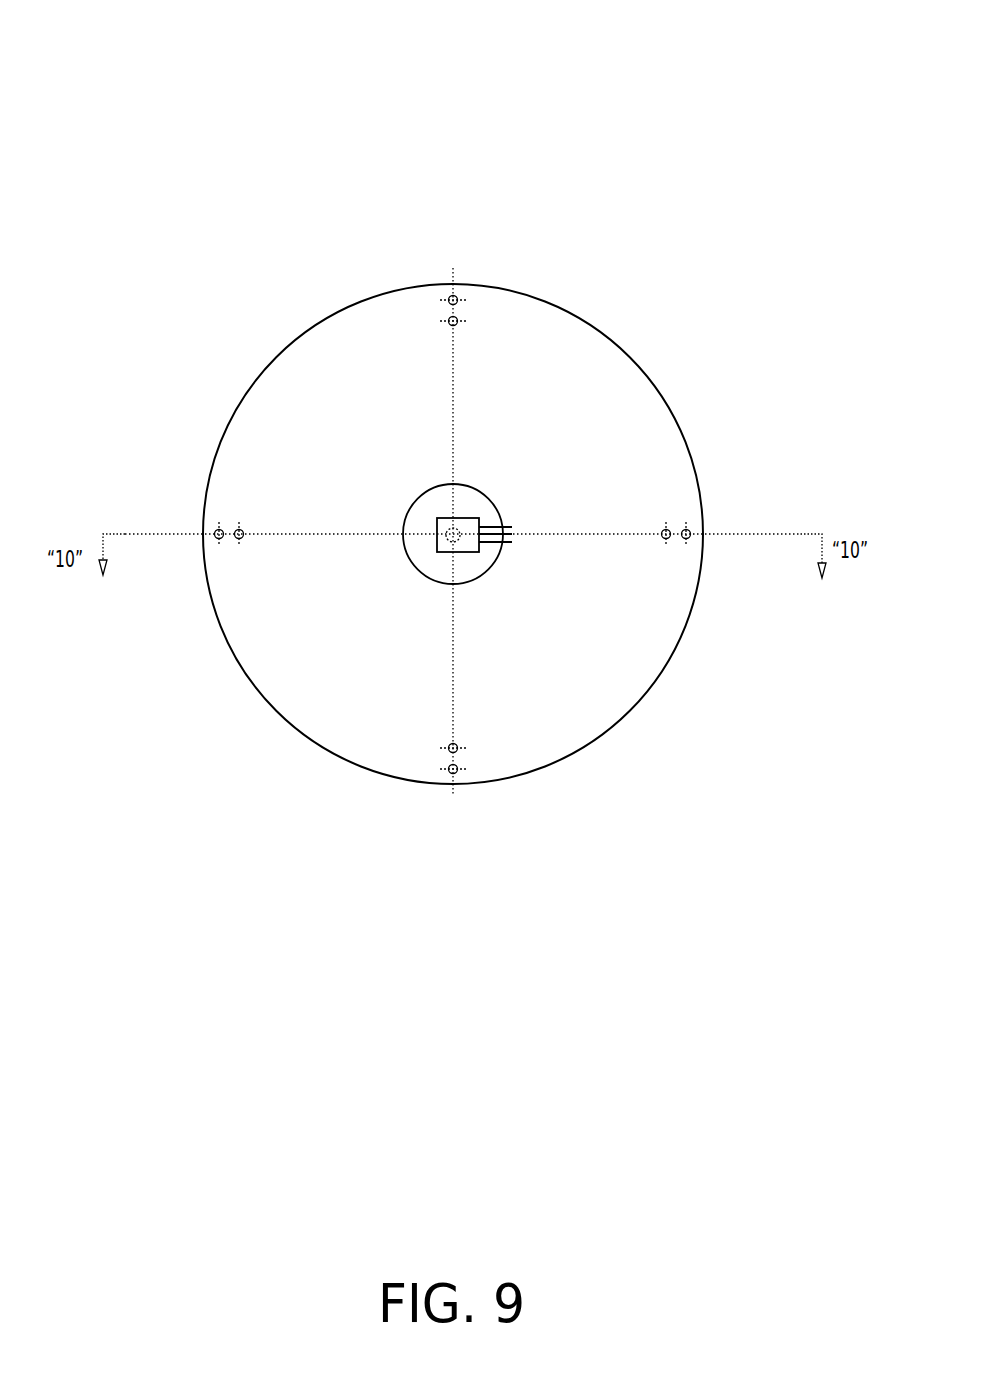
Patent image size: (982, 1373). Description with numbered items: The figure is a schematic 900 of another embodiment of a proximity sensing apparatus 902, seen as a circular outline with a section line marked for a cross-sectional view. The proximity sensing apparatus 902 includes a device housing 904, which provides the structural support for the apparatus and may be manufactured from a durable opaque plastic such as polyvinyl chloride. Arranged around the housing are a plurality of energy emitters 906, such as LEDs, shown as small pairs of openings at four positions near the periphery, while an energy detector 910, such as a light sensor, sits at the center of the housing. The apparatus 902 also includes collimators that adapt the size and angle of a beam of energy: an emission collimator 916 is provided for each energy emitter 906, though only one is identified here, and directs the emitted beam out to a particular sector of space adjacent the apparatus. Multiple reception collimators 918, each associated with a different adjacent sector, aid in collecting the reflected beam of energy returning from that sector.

The schematic 900 is at (804, 49).
The proximity sensing apparatus 902 is at (735, 200).
The device housing 904 is at (304, 308).
The energy emitters 906 is at (206, 525).
The energy detector 910 is at (485, 515).
The emission collimator 916 is at (702, 546).
The reception collimators 918 is at (672, 552).